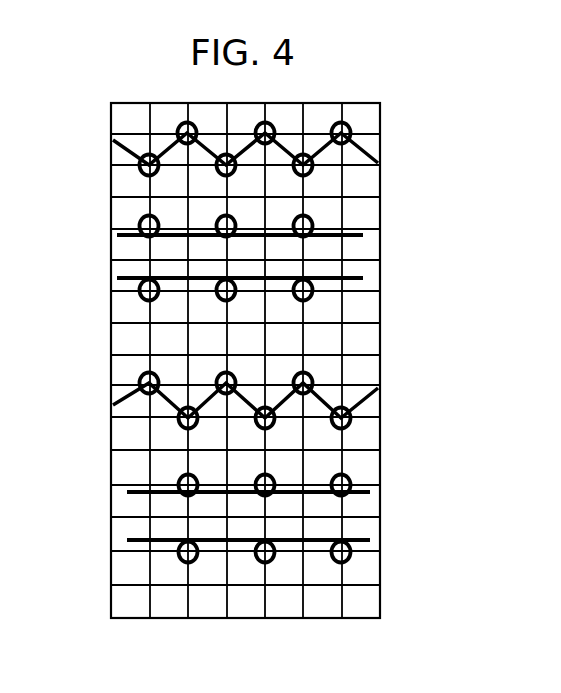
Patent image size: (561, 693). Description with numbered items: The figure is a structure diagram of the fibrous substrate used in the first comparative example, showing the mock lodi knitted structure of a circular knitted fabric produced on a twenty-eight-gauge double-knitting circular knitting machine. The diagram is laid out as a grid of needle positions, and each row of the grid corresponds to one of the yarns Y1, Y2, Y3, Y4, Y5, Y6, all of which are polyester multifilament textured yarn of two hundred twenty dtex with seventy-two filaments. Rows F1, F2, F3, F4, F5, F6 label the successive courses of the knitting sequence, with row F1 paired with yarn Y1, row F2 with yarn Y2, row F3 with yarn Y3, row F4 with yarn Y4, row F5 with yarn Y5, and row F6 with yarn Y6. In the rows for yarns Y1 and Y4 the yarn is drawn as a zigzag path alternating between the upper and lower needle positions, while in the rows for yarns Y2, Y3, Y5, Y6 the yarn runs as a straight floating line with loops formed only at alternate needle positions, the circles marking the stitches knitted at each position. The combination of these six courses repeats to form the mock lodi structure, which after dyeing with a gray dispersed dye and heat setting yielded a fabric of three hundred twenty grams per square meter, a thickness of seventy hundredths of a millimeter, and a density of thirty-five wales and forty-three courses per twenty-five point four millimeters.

The first frame / scan line pattern F1 is at (199, 149).
The second frame / scan line pattern F2 is at (180, 226).
The third frame / scan line pattern F3 is at (180, 294).
The fourth frame / scan line pattern F4 is at (199, 401).
The fifth frame / scan line pattern F5 is at (199, 484).
The sixth frame / scan line pattern F6 is at (199, 549).
The yarn Y1 is at (370, 152).
The yarn Y2 is at (354, 234).
The yarn Y3 is at (354, 280).
The yarn Y4 is at (364, 410).
The yarn Y5 is at (360, 491).
The yarn Y6 is at (358, 541).